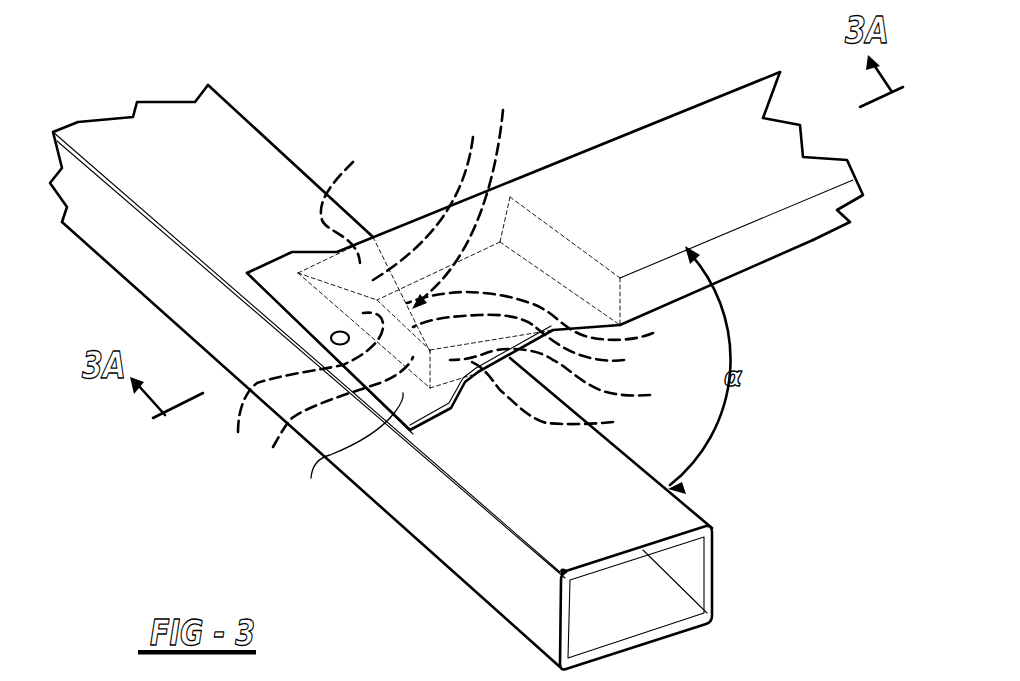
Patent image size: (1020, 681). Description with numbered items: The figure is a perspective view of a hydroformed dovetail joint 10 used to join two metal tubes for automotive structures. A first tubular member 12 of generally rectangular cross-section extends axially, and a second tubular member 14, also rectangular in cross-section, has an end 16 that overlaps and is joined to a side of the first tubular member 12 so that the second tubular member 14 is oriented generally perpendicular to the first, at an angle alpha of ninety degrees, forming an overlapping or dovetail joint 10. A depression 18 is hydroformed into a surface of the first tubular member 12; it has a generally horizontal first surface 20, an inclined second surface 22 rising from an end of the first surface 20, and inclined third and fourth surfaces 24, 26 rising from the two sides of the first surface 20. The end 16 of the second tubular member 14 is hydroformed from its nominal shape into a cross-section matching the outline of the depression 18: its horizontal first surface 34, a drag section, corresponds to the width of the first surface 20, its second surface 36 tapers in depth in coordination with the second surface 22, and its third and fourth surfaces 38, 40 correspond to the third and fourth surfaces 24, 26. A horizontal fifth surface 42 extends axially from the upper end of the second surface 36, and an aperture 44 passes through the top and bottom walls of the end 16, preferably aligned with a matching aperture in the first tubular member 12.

The hydroformed dovetail joint 10 is at (439, 166).
The first tubular member 12 is at (227, 170).
The second tubular member 14 is at (710, 137).
The end 16 is at (407, 222).
The depression 18 is at (466, 197).
The first surface 20 is at (530, 345).
The second surface 22 is at (336, 417).
The third surface 24 is at (346, 202).
The fourth surface 26 is at (553, 397).
The first surface 34 is at (542, 318).
The second surface 36 is at (305, 386).
The third surface 38 is at (430, 194).
The fourth surface 40 is at (561, 380).
The fifth surface 42 is at (352, 453).
The aperture 44 is at (332, 335).